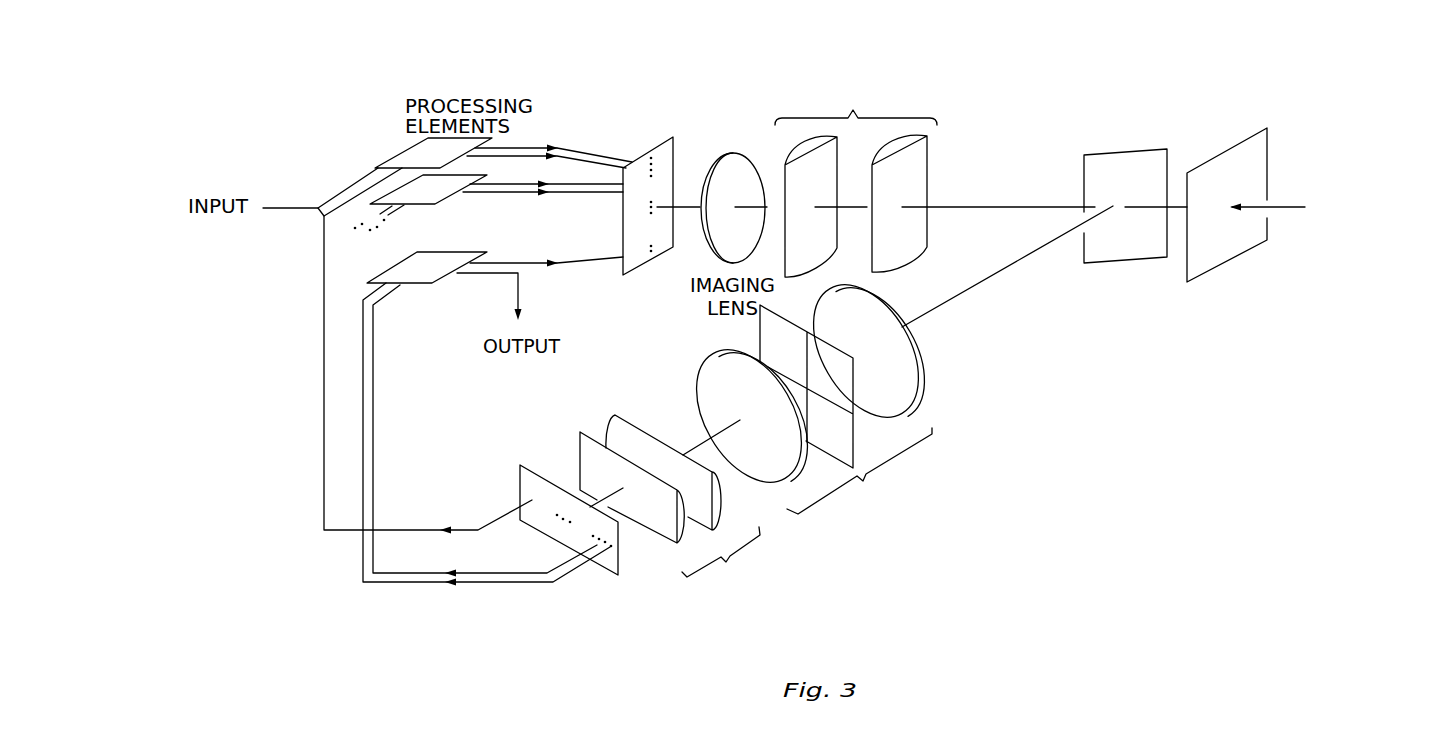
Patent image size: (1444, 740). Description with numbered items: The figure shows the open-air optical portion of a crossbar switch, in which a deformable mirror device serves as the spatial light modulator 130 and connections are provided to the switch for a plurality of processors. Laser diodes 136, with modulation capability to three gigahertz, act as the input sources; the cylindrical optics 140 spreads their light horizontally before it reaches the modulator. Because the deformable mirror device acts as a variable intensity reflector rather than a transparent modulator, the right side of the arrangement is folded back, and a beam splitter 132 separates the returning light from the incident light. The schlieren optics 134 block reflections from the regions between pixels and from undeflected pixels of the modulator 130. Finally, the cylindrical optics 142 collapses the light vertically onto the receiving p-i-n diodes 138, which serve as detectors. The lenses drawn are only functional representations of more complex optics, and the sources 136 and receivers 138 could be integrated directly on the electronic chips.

The spatial light modulator 130 is at (1232, 257).
The beam splitter 132 is at (1140, 258).
The schlieren optics 134 is at (828, 397).
The laser diodes 136 is at (668, 250).
The p-i-n diodes 138 is at (519, 494).
The cylindrical optics 140 is at (859, 158).
The cylindrical optics 142 is at (711, 513).